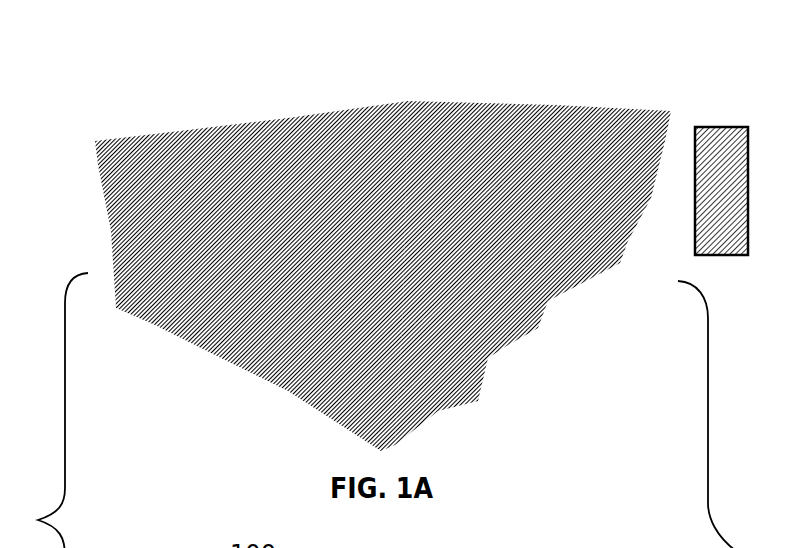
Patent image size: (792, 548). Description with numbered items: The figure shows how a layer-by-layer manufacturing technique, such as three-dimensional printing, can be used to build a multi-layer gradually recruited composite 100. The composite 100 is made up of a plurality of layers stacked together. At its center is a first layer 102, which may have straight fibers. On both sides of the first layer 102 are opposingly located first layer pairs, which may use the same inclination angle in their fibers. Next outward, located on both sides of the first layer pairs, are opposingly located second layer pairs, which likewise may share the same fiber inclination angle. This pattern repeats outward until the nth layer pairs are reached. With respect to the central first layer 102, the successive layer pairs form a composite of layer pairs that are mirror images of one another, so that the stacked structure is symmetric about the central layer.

The composite 100 is at (382, 247).
The first layer 102 is at (107, 232).